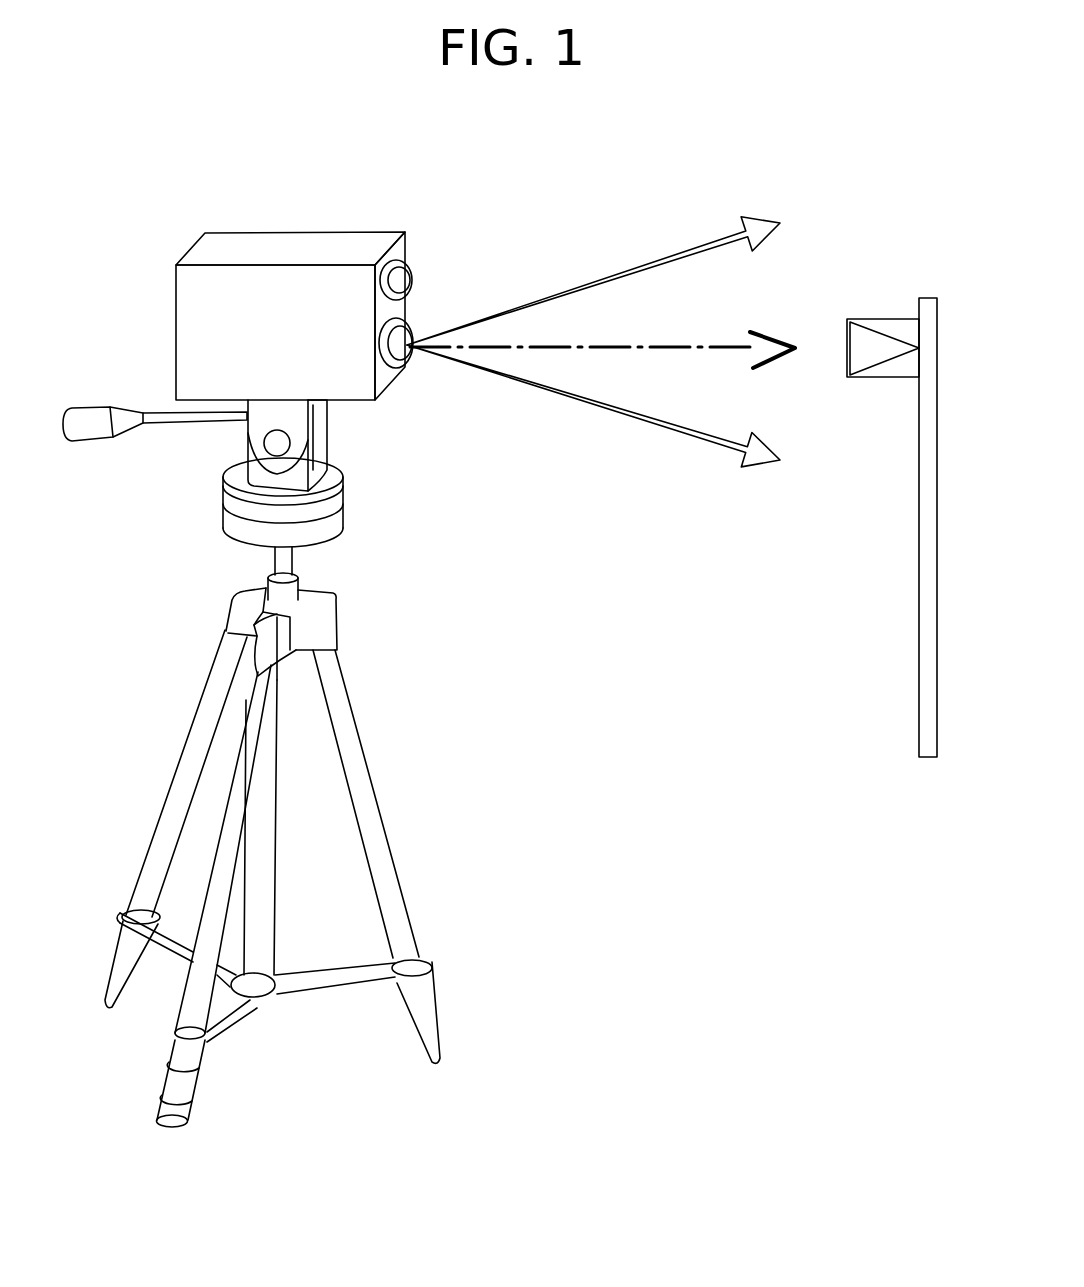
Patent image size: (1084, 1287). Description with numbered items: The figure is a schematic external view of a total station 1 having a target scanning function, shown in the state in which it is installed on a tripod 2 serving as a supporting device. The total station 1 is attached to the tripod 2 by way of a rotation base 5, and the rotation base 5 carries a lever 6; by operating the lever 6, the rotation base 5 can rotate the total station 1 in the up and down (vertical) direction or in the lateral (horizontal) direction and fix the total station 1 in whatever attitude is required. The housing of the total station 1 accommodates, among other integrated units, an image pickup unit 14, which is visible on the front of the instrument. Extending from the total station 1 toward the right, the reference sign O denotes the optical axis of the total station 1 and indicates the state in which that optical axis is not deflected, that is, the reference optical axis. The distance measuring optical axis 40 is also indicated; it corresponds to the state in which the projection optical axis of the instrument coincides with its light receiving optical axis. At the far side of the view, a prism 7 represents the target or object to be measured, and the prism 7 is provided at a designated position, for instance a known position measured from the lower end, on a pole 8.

The total station 1 is at (228, 233).
The image pickup unit 14 is at (411, 270).
The distance measuring optical axis 40 is at (630, 263).
The optical axis O is at (573, 343).
The prism 7 is at (878, 319).
The pole 8 is at (919, 613).
The lever 6 is at (120, 407).
The rotation base 5 is at (222, 535).
The tripod 2 is at (183, 753).